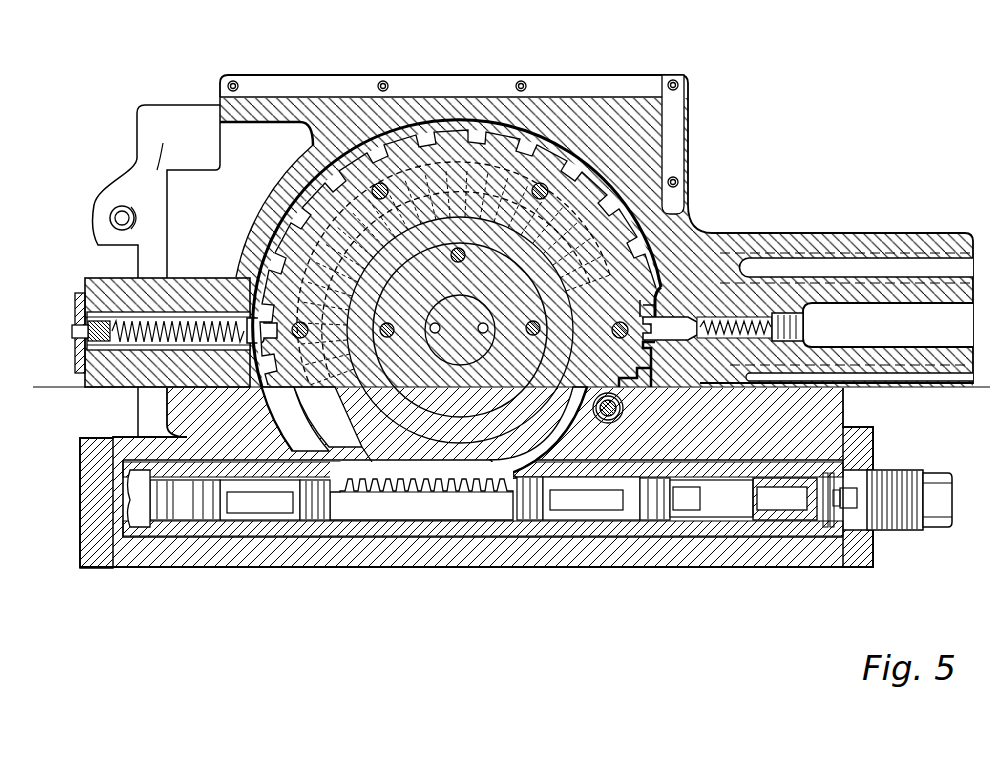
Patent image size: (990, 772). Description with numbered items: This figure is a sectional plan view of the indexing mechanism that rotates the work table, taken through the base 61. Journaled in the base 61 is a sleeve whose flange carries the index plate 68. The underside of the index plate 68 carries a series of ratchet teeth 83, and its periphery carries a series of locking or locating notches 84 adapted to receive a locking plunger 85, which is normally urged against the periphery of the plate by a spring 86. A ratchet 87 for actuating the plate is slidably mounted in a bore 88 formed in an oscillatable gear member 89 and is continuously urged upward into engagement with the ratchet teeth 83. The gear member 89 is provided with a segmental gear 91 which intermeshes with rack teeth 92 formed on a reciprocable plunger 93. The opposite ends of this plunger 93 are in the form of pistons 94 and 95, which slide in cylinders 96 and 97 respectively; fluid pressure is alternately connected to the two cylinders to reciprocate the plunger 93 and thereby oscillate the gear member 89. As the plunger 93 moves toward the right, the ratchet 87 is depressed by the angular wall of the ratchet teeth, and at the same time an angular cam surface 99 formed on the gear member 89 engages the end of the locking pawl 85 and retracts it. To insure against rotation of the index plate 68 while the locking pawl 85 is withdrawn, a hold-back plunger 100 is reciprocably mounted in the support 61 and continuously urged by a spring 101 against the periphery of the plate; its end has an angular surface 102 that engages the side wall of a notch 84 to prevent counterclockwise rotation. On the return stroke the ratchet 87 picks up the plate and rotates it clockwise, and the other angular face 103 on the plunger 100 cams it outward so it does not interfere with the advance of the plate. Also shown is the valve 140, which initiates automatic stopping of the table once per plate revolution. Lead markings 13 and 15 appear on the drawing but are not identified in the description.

The shaft 13 is at (593, 408).
The clutch teeth 15 is at (308, 267).
The base 61 is at (727, 243).
The index plate 68 is at (464, 146).
The ratchet teeth 83 is at (604, 196).
The locking notches 84 is at (551, 157).
The locking plunger 85 is at (243, 298).
The spring 86 is at (125, 283).
The ratchet 87 is at (338, 301).
The bore 88 is at (344, 272).
The oscillatable gear member 89 is at (357, 410).
The segmental gear 91 is at (513, 493).
The rack teeth 92 is at (403, 488).
The reciprocable plunger 93 is at (455, 513).
The piston 94 is at (215, 507).
The piston 95 is at (640, 507).
The cylinder 96 is at (143, 527).
The cylinder 97 is at (690, 527).
The angular cam surface 99 is at (236, 278).
The hold-back plunger 100 is at (676, 326).
The spring 101 is at (750, 317).
The angular surface 102 is at (663, 352).
The angular face 103 is at (657, 298).
The valve 140 is at (625, 409).